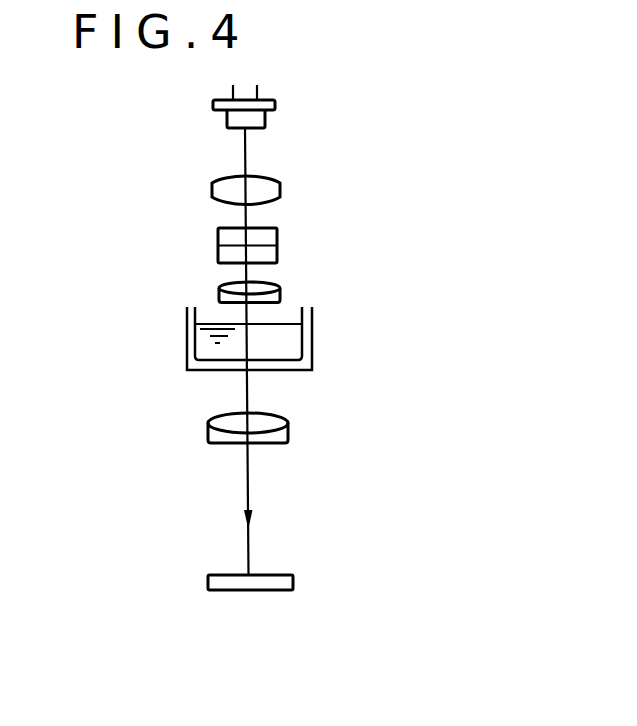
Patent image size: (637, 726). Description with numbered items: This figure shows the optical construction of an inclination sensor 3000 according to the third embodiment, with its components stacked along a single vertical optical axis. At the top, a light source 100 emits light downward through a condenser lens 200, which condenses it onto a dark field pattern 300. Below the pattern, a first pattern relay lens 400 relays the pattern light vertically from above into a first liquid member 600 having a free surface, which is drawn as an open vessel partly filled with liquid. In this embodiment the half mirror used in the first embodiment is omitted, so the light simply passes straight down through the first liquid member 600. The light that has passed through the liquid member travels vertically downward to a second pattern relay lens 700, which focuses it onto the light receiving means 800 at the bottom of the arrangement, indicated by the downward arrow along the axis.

The light source 100 is at (265, 123).
The condenser lens 200 is at (280, 191).
The dark field pattern 300 is at (277, 246).
The first pattern relay lens 400 is at (279, 293).
The first liquid member 600 is at (187, 328).
The second pattern relay lens 700 is at (288, 432).
The light receiving means 800 is at (227, 575).
The inclination sensor 3000 is at (378, 468).